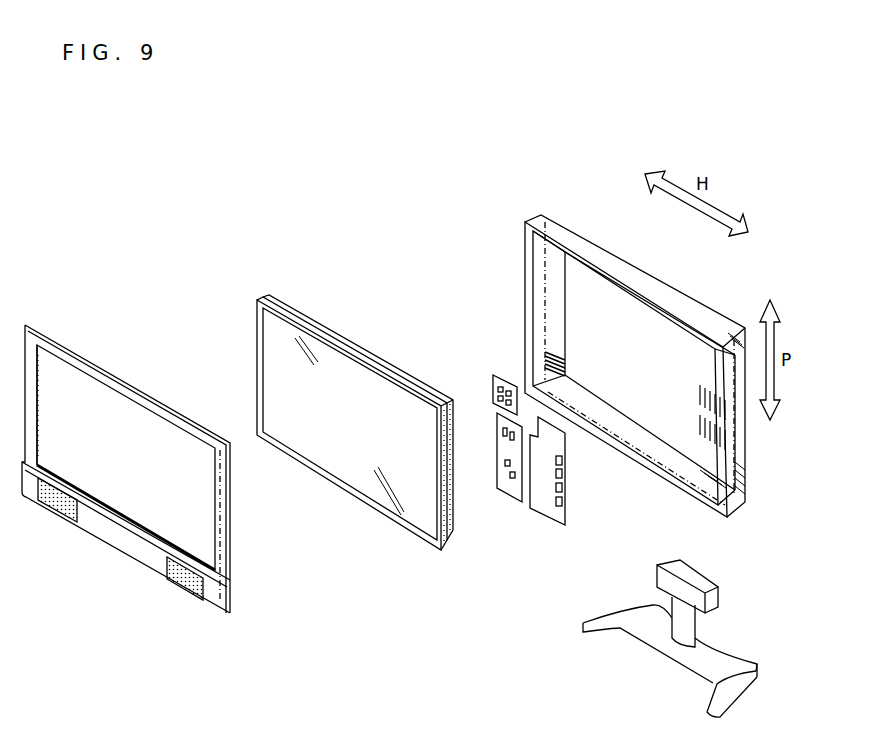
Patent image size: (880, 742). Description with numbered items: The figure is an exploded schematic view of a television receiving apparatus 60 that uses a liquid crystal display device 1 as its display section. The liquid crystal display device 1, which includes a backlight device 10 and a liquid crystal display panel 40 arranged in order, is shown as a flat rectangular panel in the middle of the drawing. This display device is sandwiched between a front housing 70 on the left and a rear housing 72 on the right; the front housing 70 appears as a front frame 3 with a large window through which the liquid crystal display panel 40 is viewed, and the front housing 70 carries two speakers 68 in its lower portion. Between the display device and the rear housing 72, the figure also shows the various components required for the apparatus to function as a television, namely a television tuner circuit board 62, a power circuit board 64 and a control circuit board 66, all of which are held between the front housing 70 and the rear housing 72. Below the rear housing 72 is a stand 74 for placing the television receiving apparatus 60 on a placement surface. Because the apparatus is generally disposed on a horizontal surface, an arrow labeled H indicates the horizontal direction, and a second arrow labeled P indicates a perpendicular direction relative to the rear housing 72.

The television receiving apparatus 60 is at (224, 166).
The front frame 3 is at (28, 318).
The liquid crystal display device 1 is at (256, 297).
The backlight device 10 is at (372, 355).
The liquid crystal display panel 40 is at (346, 464).
The control circuit board 66 is at (491, 380).
The power circuit board 64 is at (504, 490).
The television tuner circuit board 62 is at (547, 512).
The rear housing 72 is at (672, 297).
The speakers 68 is at (56, 512).
The front housing 70 is at (230, 615).
The stand 74 is at (730, 656).